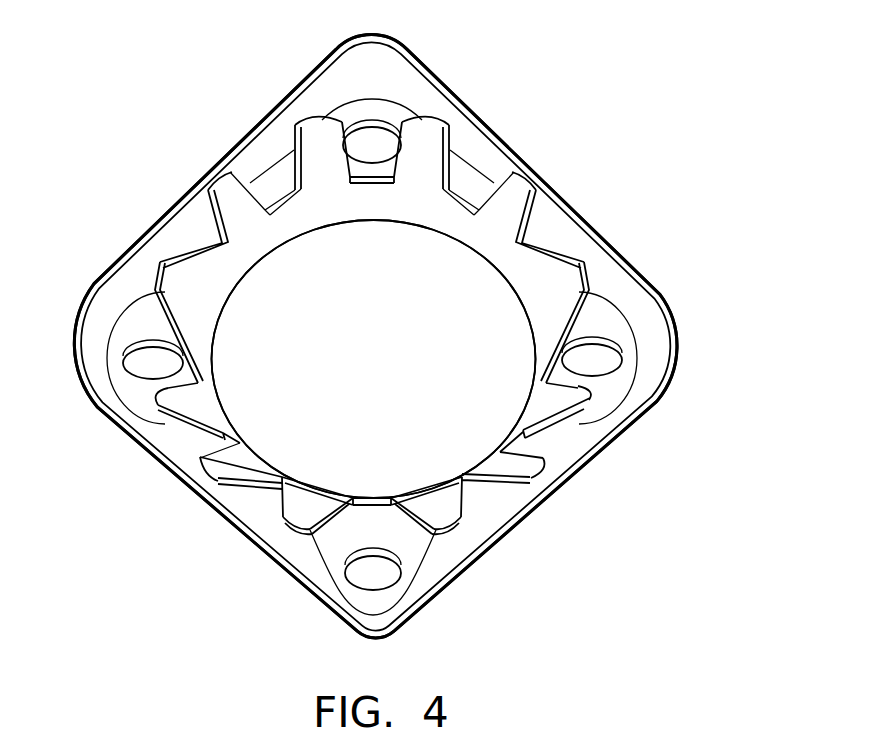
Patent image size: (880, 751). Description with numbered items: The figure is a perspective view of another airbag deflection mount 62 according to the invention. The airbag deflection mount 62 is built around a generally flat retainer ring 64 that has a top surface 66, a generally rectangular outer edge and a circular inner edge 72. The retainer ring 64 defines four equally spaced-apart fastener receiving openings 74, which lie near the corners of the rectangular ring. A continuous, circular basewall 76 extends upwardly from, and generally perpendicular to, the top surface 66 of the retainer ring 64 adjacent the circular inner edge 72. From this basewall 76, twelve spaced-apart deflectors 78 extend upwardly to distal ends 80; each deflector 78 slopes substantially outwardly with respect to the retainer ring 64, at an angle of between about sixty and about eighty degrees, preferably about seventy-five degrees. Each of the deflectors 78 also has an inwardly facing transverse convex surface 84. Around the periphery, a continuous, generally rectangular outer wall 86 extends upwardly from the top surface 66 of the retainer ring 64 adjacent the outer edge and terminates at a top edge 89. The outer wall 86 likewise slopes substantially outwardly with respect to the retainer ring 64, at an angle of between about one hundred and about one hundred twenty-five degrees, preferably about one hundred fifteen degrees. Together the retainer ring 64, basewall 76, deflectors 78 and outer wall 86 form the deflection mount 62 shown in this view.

The airbag deflection mount 62 is at (540, 120).
The retainer ring 64 is at (640, 320).
The top surface 66 is at (609, 319).
The inner edge 72 is at (300, 240).
The fastener receiving openings 74 is at (366, 135).
The basewall 76 is at (424, 221).
The deflectors 78 is at (325, 190).
The distal ends 80 is at (318, 122).
The transverse convex surface 84 is at (323, 133).
The outer wall 86 is at (684, 378).
The top edge 89 is at (680, 336).